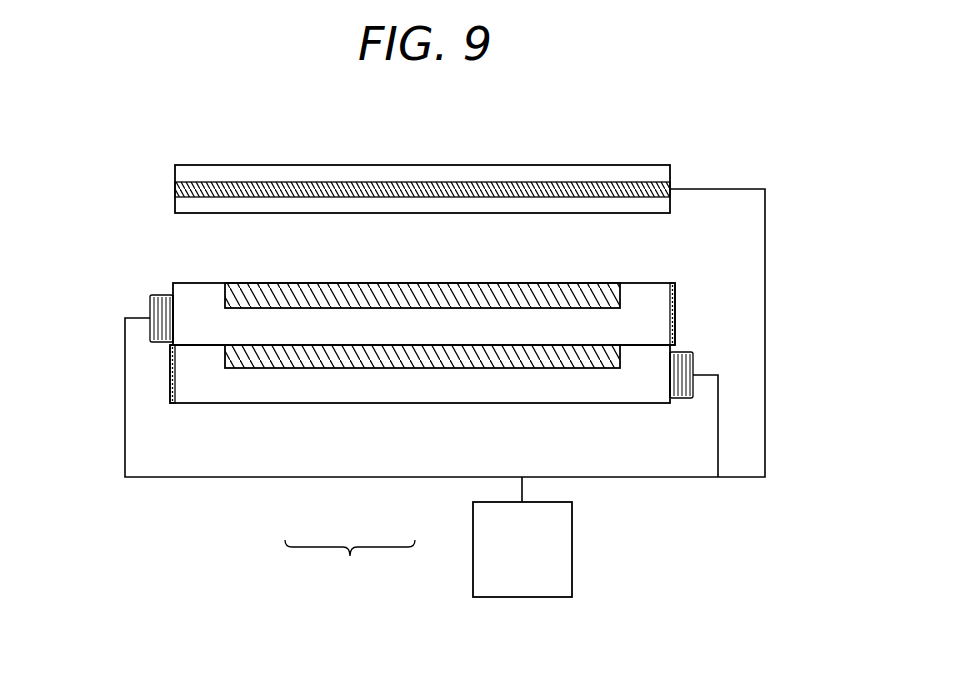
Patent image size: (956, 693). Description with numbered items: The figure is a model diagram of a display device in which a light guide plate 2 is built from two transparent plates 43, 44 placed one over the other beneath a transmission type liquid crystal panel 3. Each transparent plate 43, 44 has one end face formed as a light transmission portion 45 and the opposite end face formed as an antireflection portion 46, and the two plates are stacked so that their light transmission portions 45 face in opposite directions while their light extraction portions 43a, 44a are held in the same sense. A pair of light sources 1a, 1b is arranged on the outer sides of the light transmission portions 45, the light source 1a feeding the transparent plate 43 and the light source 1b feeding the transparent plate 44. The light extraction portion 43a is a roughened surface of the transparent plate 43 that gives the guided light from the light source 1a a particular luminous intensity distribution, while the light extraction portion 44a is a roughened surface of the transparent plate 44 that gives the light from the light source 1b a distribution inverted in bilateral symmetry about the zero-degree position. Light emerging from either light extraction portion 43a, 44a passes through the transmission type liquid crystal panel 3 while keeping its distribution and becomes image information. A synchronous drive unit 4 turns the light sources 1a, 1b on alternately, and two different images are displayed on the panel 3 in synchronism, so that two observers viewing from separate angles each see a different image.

The light source 1a is at (158, 305).
The light source 1b is at (697, 373).
The light guide plate 2 is at (340, 589).
The transmission type liquid crystal panel 3 is at (574, 172).
The synchronous drive unit 4 is at (502, 576).
The transparent plate 43 is at (440, 328).
The light extraction portion 43a is at (592, 297).
The transparent plate 44 is at (345, 380).
The light extraction portion 44a is at (245, 357).
The light transmission portion 45 is at (175, 315).
The antireflection portion 46 is at (678, 318).